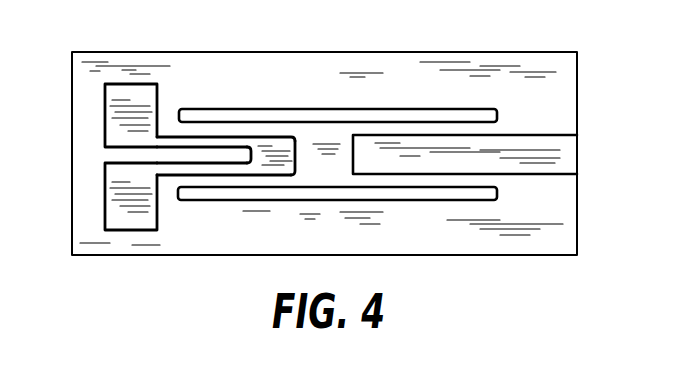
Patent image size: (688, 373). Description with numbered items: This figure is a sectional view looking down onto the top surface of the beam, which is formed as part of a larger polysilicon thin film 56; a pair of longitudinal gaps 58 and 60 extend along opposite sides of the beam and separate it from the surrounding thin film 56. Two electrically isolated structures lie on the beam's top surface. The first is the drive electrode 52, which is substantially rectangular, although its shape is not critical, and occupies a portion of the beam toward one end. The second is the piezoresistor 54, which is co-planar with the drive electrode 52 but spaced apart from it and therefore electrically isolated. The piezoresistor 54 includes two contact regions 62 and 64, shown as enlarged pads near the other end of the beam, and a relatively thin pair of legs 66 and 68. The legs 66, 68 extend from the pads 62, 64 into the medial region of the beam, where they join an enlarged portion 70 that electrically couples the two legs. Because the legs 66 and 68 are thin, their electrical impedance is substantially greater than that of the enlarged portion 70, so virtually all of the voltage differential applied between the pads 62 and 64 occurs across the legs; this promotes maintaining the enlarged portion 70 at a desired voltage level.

The drive electrode 52 is at (560, 157).
The piezoresistor 54 is at (230, 157).
The polysilicon thin film 56 is at (525, 67).
The longitudinal gap 58 is at (398, 113).
The longitudinal gap 60 is at (404, 197).
The contact region 62 is at (120, 113).
The contact region 64 is at (125, 198).
The leg 66 is at (195, 137).
The leg 68 is at (207, 167).
The enlarged portion 70 is at (277, 160).